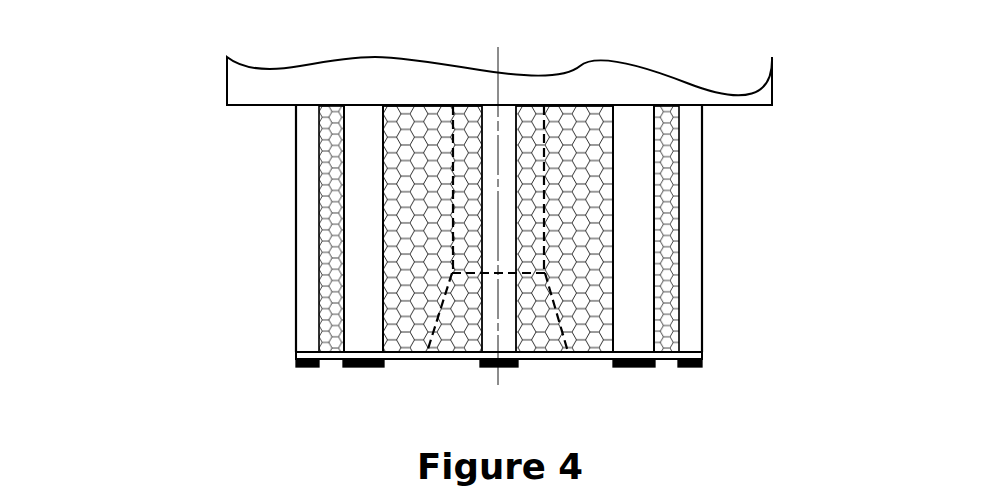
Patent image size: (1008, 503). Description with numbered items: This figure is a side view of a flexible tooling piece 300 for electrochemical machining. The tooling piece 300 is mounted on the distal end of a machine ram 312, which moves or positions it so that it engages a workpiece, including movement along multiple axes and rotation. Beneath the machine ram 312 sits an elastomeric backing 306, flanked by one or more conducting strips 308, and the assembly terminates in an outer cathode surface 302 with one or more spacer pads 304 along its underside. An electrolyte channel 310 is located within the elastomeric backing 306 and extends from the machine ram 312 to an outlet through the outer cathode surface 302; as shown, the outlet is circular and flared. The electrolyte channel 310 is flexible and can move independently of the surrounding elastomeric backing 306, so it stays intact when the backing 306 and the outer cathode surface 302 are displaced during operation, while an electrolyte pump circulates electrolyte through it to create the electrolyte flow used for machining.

The flexible tooling piece 300 is at (128, 297).
The outer cathode surface 302 is at (302, 356).
The spacer pads 304 is at (362, 368).
The elastomeric backing 306 is at (573, 138).
The conducting strips 308 is at (298, 263).
The electrolyte channel 310 is at (453, 158).
The machine ram 312 is at (240, 83).